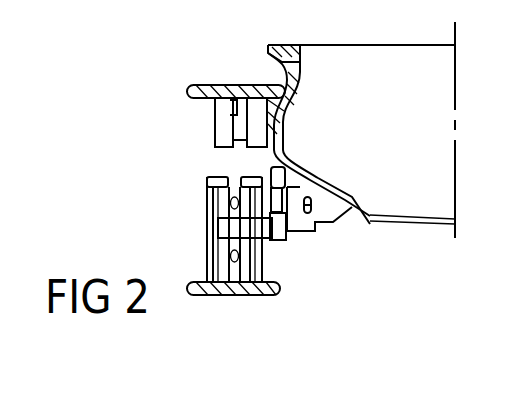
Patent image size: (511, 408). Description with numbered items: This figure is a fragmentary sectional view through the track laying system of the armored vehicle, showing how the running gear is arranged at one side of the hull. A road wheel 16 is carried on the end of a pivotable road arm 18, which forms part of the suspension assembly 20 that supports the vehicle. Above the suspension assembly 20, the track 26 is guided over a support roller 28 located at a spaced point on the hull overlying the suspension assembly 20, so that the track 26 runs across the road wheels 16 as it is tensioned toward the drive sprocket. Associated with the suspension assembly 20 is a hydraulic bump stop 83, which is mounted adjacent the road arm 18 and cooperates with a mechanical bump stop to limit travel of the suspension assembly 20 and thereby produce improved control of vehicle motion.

The road wheel 16 is at (207, 247).
The road arm 18 is at (283, 240).
The suspension assembly 20 is at (322, 238).
The track 26 is at (220, 87).
The support roller 28 is at (218, 127).
The hydraulic bump stop 83 is at (302, 160).